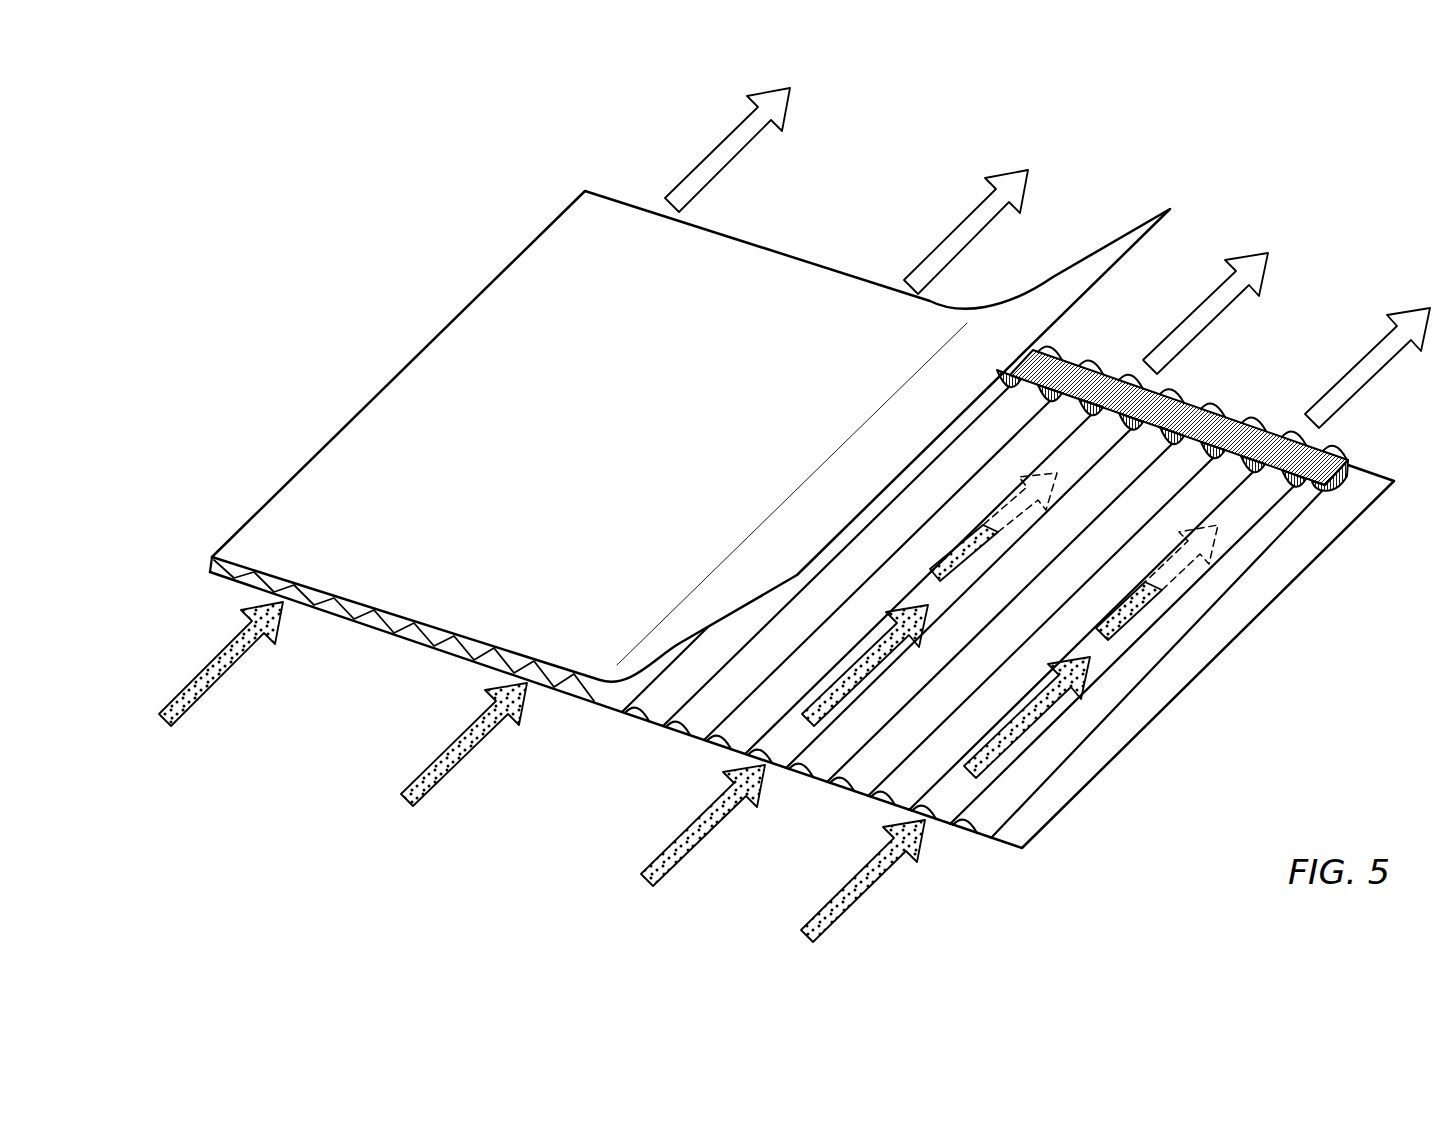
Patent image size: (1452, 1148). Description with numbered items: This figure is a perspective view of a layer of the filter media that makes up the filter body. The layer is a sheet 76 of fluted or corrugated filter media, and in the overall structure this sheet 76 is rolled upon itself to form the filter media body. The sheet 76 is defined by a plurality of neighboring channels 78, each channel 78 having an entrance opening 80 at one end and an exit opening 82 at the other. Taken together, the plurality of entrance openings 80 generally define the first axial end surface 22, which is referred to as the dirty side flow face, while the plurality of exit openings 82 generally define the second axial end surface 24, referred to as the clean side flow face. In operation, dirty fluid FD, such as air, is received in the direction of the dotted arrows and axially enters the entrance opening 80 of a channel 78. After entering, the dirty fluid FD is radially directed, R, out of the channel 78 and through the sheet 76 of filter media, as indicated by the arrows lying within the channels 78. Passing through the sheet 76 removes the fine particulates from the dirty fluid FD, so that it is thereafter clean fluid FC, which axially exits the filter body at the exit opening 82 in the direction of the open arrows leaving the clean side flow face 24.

The sheet 76 is at (802, 520).
The second axial end surface 24 is at (814, 248).
The first axial end surface 22 is at (766, 612).
The channel 78 is at (788, 735).
The entrance opening 80 is at (777, 772).
The exit opening 82 is at (1152, 386).
The radial direction R is at (1153, 603).
The clean fluid FC is at (733, 160).
The dirty fluid FD is at (222, 676).